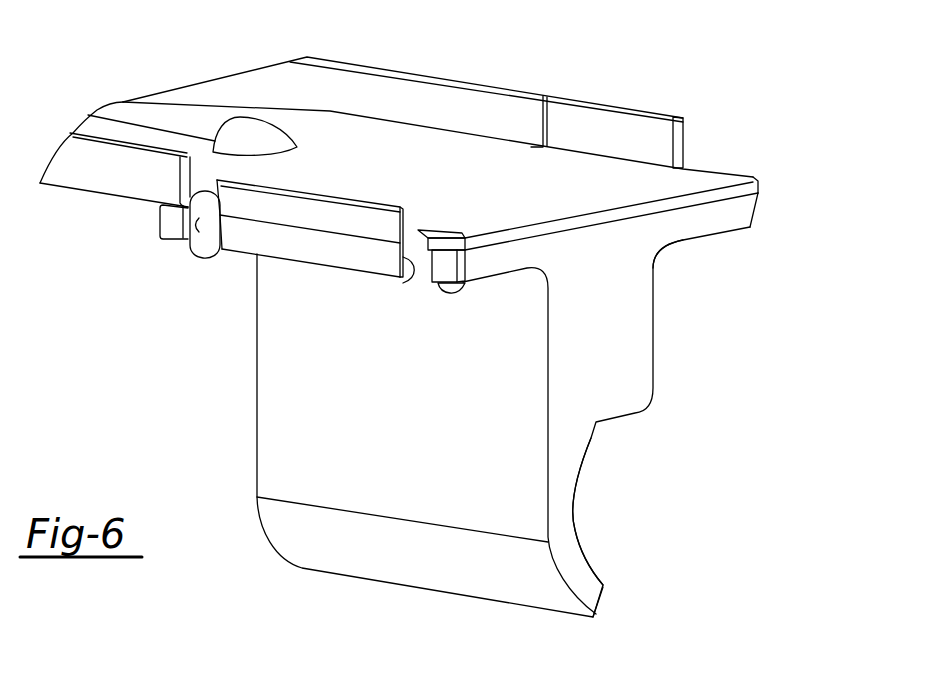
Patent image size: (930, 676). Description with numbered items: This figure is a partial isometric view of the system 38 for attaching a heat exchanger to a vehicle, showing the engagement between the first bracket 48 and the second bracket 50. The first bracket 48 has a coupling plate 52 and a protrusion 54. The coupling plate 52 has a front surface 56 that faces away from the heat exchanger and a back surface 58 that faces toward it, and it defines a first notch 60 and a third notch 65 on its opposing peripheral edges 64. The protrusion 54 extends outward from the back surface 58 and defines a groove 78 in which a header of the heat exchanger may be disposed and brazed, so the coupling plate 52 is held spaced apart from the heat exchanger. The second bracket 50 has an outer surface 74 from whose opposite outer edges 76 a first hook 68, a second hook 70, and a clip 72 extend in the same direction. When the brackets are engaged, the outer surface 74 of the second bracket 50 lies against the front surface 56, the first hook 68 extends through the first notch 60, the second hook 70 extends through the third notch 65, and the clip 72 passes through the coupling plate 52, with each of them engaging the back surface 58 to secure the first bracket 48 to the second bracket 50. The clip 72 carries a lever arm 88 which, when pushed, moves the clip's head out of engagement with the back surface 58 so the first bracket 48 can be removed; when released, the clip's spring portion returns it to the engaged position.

The system 38 is at (116, 74).
The first bracket 48 is at (665, 346).
The second bracket 50 is at (314, 82).
The coupling plate 52 is at (246, 240).
The protrusion 54 is at (300, 576).
The front surface 56 is at (735, 187).
The back surface 58 is at (684, 241).
The first notch 60 is at (415, 272).
The opposing peripheral edges 64 is at (347, 253).
The third notch 65 is at (192, 228).
The first hook 68 is at (428, 272).
The second hook 70 is at (193, 245).
The clip 72 is at (658, 117).
The outer surface 74 is at (707, 203).
The outer edges 76 is at (409, 233).
The groove 78 is at (574, 514).
The lever arm 88 is at (592, 134).